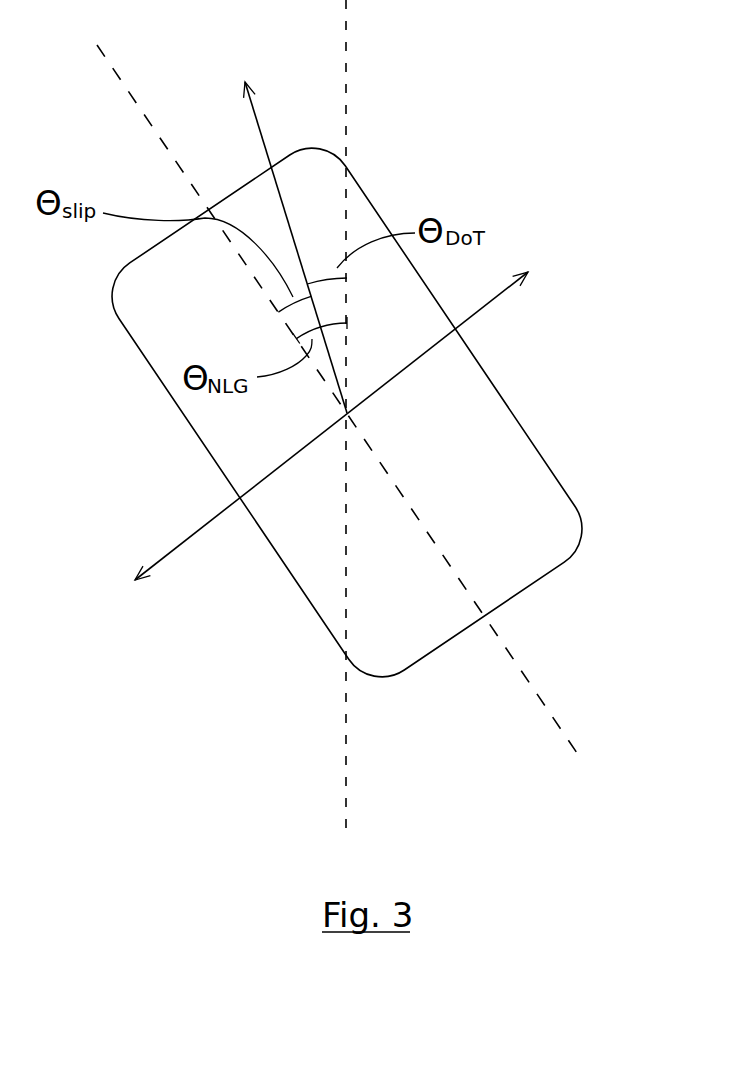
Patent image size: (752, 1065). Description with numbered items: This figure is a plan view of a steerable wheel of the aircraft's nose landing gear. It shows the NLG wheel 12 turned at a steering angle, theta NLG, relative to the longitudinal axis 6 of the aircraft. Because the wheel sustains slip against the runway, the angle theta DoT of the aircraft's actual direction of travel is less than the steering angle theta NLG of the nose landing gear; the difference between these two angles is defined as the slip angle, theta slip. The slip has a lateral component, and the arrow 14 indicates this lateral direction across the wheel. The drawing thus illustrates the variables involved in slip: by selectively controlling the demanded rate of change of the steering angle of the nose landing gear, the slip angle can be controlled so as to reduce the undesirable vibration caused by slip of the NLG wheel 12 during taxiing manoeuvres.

The longitudinal axis 6 is at (352, 33).
The NLG wheel 12 is at (407, 655).
The arrow 14 is at (168, 563).